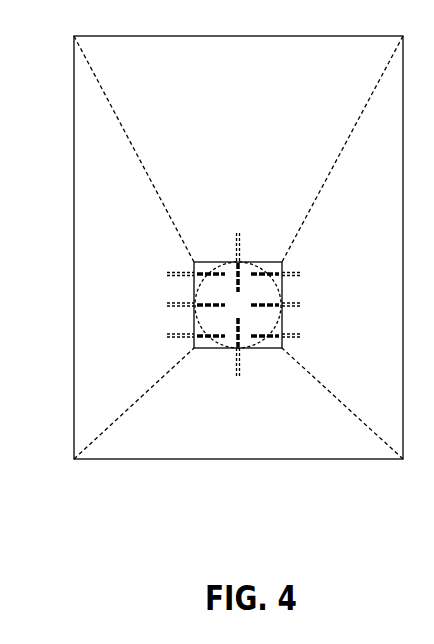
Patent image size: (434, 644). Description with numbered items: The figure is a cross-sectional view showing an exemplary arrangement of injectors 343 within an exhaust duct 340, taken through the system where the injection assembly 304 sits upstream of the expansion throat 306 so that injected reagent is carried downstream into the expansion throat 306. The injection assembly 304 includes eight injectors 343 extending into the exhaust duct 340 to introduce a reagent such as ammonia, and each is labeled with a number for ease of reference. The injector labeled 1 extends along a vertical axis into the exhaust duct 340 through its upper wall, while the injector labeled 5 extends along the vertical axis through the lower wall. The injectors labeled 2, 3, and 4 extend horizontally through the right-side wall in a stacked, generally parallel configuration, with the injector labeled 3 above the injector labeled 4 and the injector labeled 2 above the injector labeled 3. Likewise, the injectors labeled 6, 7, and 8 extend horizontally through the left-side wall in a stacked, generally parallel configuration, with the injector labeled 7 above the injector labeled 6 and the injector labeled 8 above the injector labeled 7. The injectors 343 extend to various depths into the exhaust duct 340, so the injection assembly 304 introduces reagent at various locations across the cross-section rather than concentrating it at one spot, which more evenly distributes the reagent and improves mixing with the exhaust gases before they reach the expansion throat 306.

The injection assembly 304 is at (190, 198).
The expansion throat 306 is at (228, 88).
The exhaust duct 340 is at (212, 262).
The injector 343 is at (237, 262).
The first injector label 1 is at (295, 218).
The second injector label 2 is at (378, 274).
The third injector label 3 is at (378, 304).
The fourth injector label 4 is at (378, 336).
The fifth injector label 5 is at (297, 394).
The sixth injector label 6 is at (100, 336).
The seventh injector label 7 is at (100, 304).
The eighth injector label 8 is at (100, 274).